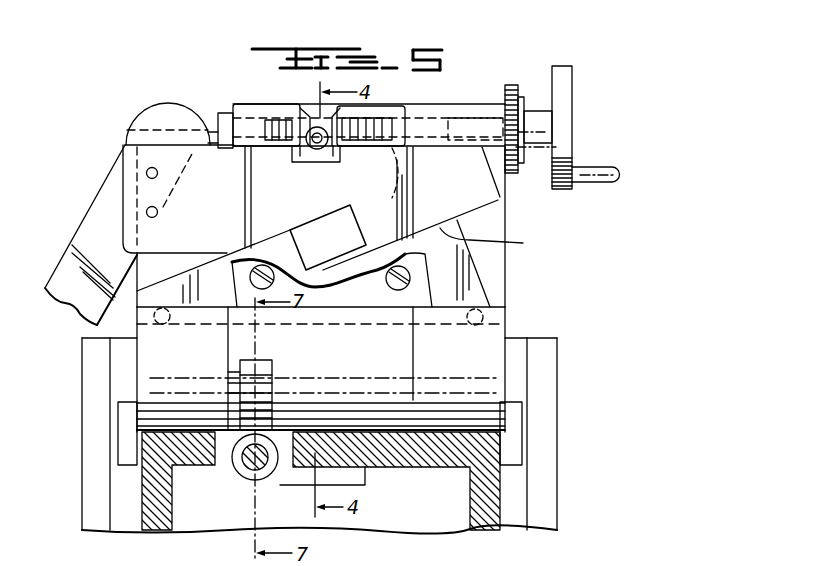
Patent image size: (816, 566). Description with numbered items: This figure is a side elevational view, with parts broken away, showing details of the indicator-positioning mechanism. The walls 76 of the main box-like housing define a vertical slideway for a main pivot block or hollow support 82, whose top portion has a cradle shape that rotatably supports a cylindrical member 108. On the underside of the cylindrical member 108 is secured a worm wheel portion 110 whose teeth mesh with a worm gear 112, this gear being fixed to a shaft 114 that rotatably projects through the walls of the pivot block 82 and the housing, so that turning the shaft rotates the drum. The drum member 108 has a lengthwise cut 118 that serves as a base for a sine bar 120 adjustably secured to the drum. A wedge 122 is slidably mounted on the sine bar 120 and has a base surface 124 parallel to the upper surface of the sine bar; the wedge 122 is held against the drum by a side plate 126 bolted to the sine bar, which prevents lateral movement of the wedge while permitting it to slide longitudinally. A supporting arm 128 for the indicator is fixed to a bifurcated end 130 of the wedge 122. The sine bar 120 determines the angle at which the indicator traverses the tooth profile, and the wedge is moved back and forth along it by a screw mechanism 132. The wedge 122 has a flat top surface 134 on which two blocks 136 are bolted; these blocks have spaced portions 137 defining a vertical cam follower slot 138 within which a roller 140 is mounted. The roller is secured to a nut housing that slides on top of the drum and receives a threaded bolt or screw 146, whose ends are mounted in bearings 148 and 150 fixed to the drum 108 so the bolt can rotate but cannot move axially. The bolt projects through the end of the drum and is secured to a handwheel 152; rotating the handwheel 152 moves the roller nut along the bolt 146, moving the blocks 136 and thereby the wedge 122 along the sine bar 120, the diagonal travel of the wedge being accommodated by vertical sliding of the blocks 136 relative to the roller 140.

The walls 76 is at (550, 505).
The main pivot block 82 is at (438, 452).
The cylindrical member 108 is at (478, 356).
The worm wheel portion 110 is at (252, 398).
The worm gear 112 is at (240, 467).
The shaft 114 is at (263, 468).
The lengthwise cut 118 is at (505, 318).
The sine bar 120 is at (468, 287).
The wedge 122 is at (470, 195).
The base surface 124 is at (508, 243).
The side plate 126 is at (367, 296).
The supporting arm 128 is at (93, 237).
The bifurcated end 130 is at (152, 157).
The screw mechanism 132 is at (434, 103).
The flat top surface 134 is at (208, 130).
The blocks 136 is at (247, 117).
The spaced portions 137 is at (301, 162).
The cam follower slot 138 is at (330, 118).
The roller 140 is at (322, 162).
The threaded bolt 146 is at (381, 183).
The bearing 148 is at (488, 118).
The bearing 150 is at (223, 117).
The handwheel 152 is at (567, 123).